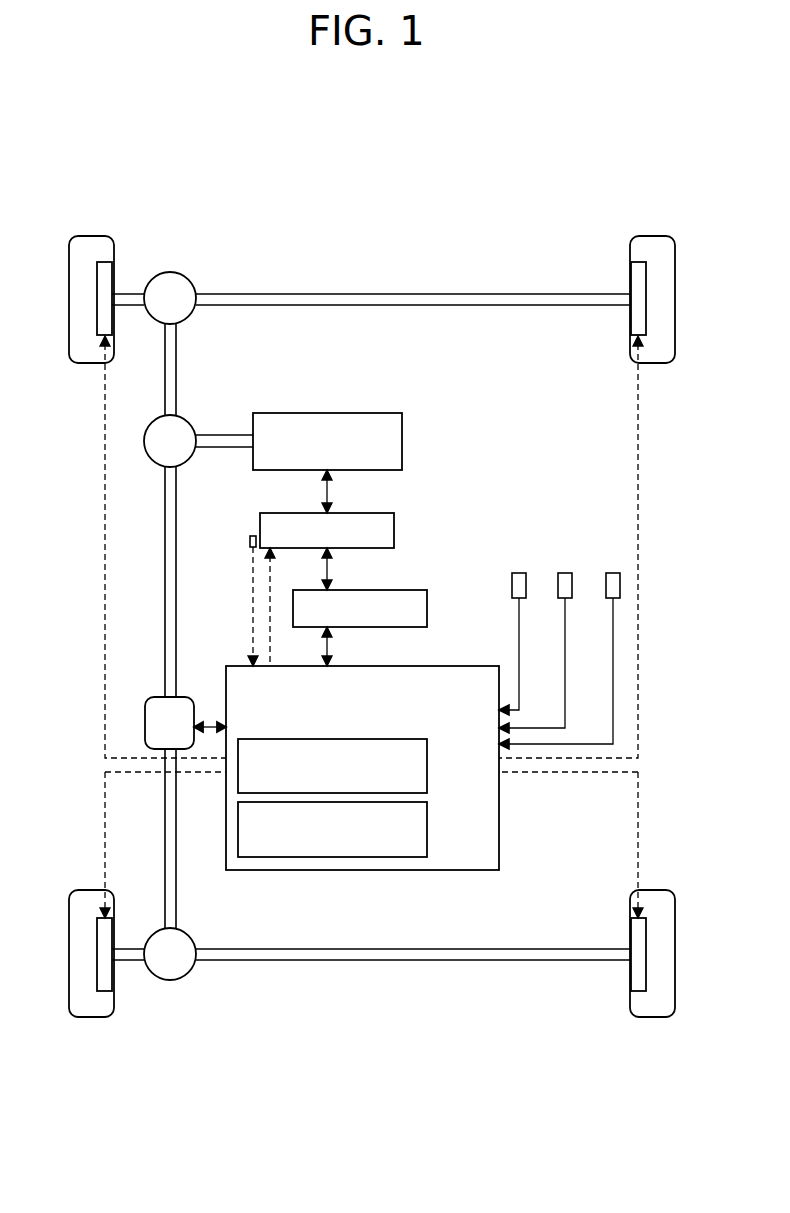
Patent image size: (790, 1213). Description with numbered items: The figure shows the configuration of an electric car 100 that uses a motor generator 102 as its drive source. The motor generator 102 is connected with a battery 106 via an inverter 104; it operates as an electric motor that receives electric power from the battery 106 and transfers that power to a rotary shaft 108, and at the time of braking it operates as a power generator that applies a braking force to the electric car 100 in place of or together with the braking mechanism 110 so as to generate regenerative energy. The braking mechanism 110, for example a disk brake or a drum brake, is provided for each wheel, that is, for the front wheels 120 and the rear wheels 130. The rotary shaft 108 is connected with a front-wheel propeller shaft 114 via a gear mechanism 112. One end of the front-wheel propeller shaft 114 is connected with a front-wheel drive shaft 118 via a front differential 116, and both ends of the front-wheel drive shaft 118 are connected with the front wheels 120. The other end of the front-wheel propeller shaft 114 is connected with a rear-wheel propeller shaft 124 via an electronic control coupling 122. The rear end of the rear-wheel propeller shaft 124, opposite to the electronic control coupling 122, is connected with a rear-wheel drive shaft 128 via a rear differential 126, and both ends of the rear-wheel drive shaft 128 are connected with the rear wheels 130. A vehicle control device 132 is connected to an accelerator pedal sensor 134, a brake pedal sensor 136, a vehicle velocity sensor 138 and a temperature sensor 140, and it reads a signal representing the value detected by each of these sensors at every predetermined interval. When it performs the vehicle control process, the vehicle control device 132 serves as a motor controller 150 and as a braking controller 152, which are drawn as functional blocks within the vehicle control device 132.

The electric car 100 is at (178, 119).
The motor generator 102 is at (402, 440).
The inverter 104 is at (394, 528).
The battery 106 is at (410, 590).
The rotary shaft 108 is at (238, 435).
The braking mechanism 110 is at (110, 262).
The gear mechanism 112 is at (150, 428).
The front-wheel propeller shaft 114 is at (165, 622).
The front differential 116 is at (170, 272).
The front-wheel drive shaft 118 is at (558, 294).
The front wheels 120 is at (95, 236).
The electronic control coupling 122 is at (145, 705).
The rear-wheel propeller shaft 124 is at (165, 853).
The rear differential 126 is at (170, 980).
The rear-wheel drive shaft 128 is at (545, 960).
The rear wheels 130 is at (92, 1017).
The vehicle control device 132 is at (460, 666).
The accelerator pedal sensor 134 is at (565, 573).
The brake pedal sensor 136 is at (519, 573).
The vehicle velocity sensor 138 is at (613, 573).
The temperature sensor 140 is at (250, 538).
The motor controller 150 is at (427, 770).
The braking controller 152 is at (427, 834).